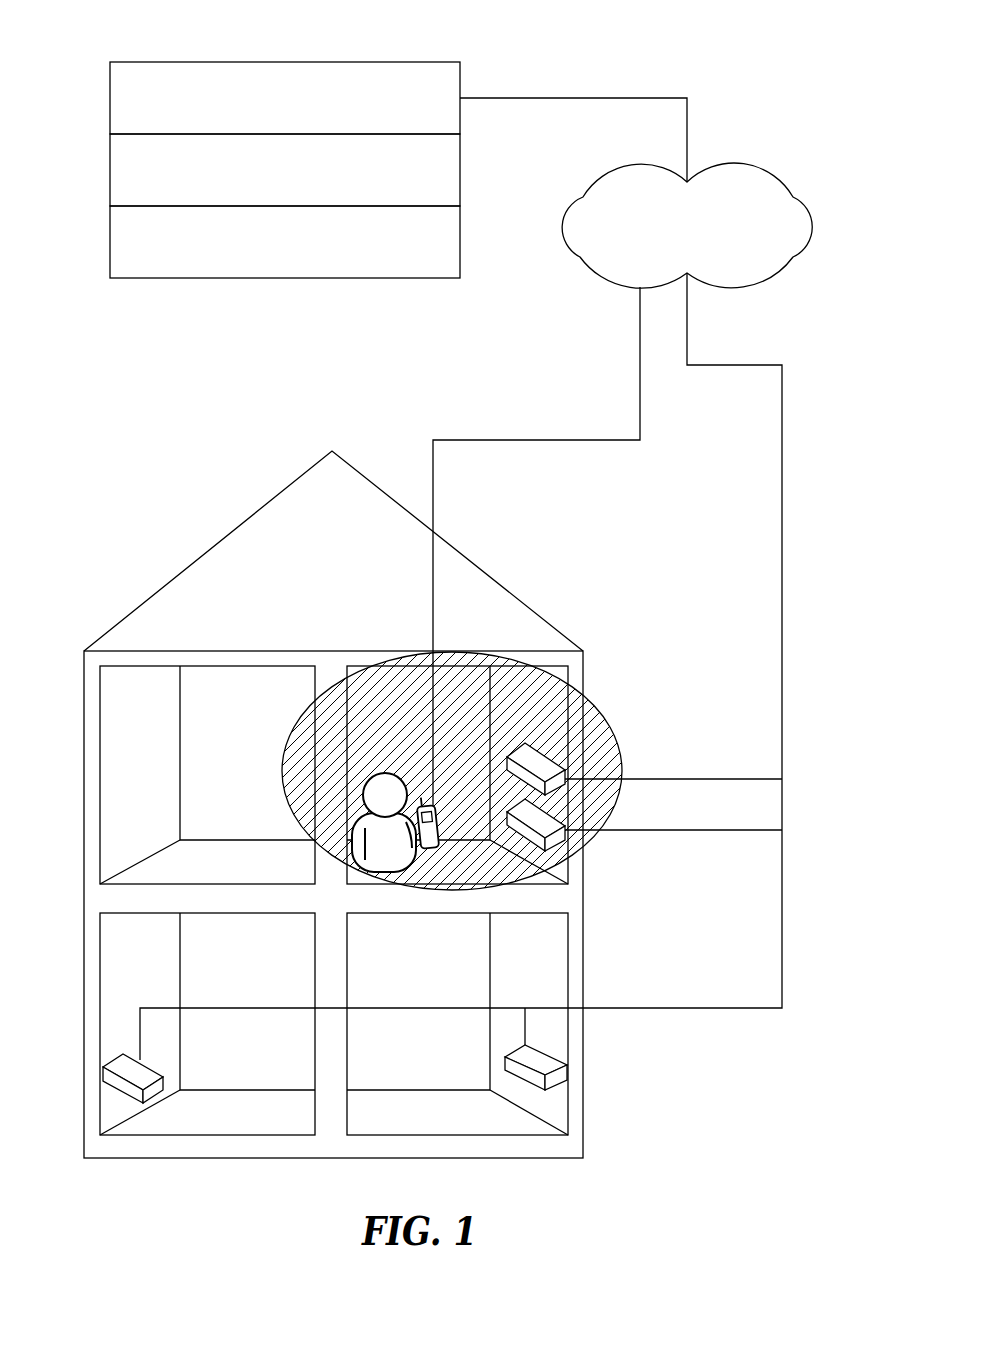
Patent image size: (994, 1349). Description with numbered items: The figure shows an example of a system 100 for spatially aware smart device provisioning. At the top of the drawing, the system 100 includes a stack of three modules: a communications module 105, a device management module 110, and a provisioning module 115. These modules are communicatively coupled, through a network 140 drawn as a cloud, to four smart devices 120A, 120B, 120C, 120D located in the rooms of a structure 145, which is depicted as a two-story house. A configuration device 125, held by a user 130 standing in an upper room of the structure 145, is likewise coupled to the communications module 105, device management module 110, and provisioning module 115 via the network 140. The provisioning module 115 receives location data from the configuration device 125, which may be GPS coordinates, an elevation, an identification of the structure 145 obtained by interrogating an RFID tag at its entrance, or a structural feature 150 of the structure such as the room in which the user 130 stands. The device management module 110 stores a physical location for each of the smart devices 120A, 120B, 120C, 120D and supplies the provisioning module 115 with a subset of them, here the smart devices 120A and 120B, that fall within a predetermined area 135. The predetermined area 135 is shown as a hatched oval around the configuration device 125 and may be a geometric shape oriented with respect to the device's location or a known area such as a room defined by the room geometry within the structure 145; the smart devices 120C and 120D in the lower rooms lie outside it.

The system 100 is at (704, 26).
The communications module 105 is at (251, 97).
The device management module 110 is at (251, 168).
The provisioning module 115 is at (251, 238).
The smart device 120A is at (608, 756).
The smart device 120B is at (597, 842).
The smart device 120C is at (101, 1120).
The smart device 120D is at (503, 1120).
The configuration device 125 is at (389, 855).
The user 130 is at (352, 860).
The predetermined area 135 is at (451, 771).
The network 140 is at (688, 197).
The structure 145 is at (355, 804).
The structural feature 150 is at (507, 761).